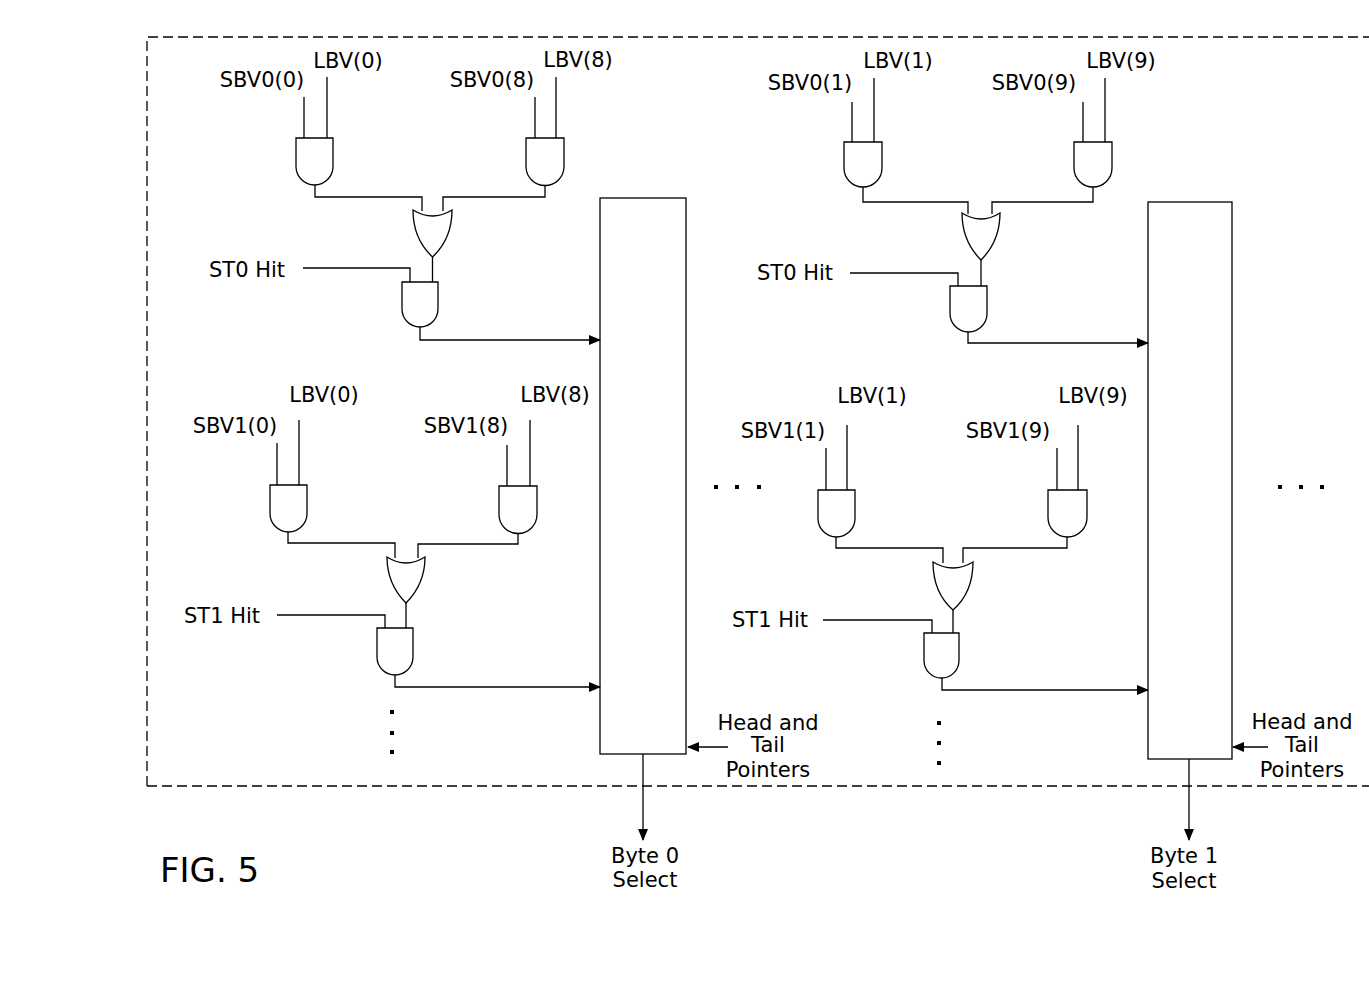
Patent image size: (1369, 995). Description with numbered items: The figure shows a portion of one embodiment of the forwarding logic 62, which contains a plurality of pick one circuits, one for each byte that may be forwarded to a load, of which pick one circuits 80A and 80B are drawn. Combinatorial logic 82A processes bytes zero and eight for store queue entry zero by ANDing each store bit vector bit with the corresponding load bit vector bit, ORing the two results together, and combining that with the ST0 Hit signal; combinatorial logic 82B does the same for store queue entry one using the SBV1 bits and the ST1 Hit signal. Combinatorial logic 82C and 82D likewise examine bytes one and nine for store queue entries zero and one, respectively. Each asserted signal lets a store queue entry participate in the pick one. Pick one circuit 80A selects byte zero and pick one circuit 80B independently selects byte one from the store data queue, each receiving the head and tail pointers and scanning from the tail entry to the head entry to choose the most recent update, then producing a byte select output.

The forwarding logic 62 is at (1327, 103).
The pick one circuit 80A is at (665, 743).
The pick one circuit 80B is at (1168, 748).
The combinatorial logic 82A is at (360, 306).
The combinatorial logic 82B is at (345, 653).
The combinatorial logic 82C is at (912, 306).
The combinatorial logic 82D is at (905, 678).